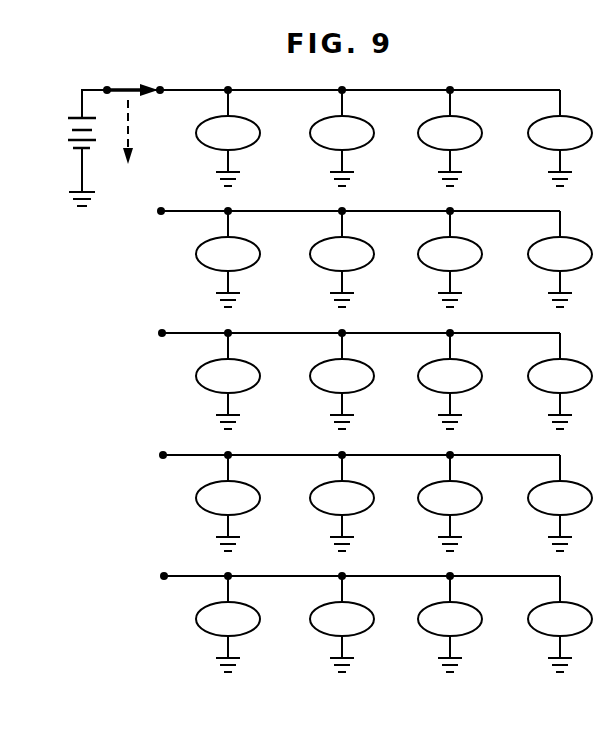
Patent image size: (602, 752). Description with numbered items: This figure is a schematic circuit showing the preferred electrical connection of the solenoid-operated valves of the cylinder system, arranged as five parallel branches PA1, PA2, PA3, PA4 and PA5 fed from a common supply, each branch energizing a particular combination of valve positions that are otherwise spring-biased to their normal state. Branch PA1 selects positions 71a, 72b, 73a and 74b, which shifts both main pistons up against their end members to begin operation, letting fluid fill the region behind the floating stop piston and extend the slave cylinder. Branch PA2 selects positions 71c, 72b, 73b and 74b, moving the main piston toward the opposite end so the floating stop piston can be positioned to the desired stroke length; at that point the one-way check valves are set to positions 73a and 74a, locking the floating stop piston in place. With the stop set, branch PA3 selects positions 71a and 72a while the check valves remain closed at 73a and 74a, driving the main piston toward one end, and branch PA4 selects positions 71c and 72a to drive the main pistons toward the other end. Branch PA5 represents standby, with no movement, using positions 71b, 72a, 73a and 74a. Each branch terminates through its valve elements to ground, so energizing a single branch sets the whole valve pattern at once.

The branch PA1 is at (314, 145).
The branch PA2 is at (353, 225).
The branch PA3 is at (353, 348).
The branch PA4 is at (353, 470).
The branch PA5 is at (353, 591).
The valve position 71a is at (228, 257).
The valve position 71b is at (228, 622).
The valve position 71c is at (228, 379).
The valve position 72a is at (342, 500).
The valve position 72b is at (342, 196).
The check valve position 73a is at (450, 500).
The check valve position 73b is at (450, 196).
The check valve position 74a is at (560, 502).
The check valve position 74b is at (560, 198).